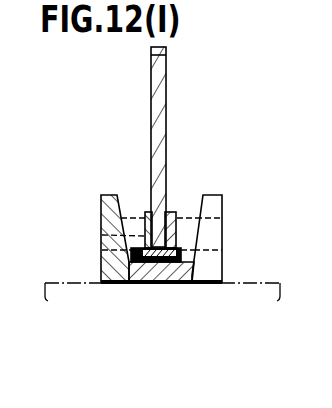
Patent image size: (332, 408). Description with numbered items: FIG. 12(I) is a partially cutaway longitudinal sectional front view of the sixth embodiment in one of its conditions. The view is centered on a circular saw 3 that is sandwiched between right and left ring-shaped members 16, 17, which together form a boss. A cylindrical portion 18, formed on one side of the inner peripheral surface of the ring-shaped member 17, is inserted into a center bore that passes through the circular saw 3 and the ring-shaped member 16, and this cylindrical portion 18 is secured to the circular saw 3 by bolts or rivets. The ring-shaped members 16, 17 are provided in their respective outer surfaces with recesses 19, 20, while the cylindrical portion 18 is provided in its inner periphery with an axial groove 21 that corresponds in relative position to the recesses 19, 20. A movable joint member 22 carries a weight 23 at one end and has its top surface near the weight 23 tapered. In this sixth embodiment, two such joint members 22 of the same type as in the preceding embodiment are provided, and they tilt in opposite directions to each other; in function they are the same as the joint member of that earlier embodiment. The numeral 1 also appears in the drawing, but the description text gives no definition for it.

The substrate 1 is at (242, 282).
The circular saw 3 is at (154, 106).
The ring-shaped member 16 is at (147, 212).
The ring-shaped member 17 is at (174, 212).
The cylindrical portion 18 is at (117, 282).
The recess 19 is at (102, 235).
The recess 20 is at (177, 233).
The axial groove 21 is at (162, 282).
The movable joint member 22 is at (187, 282).
The weight 23 is at (103, 202).